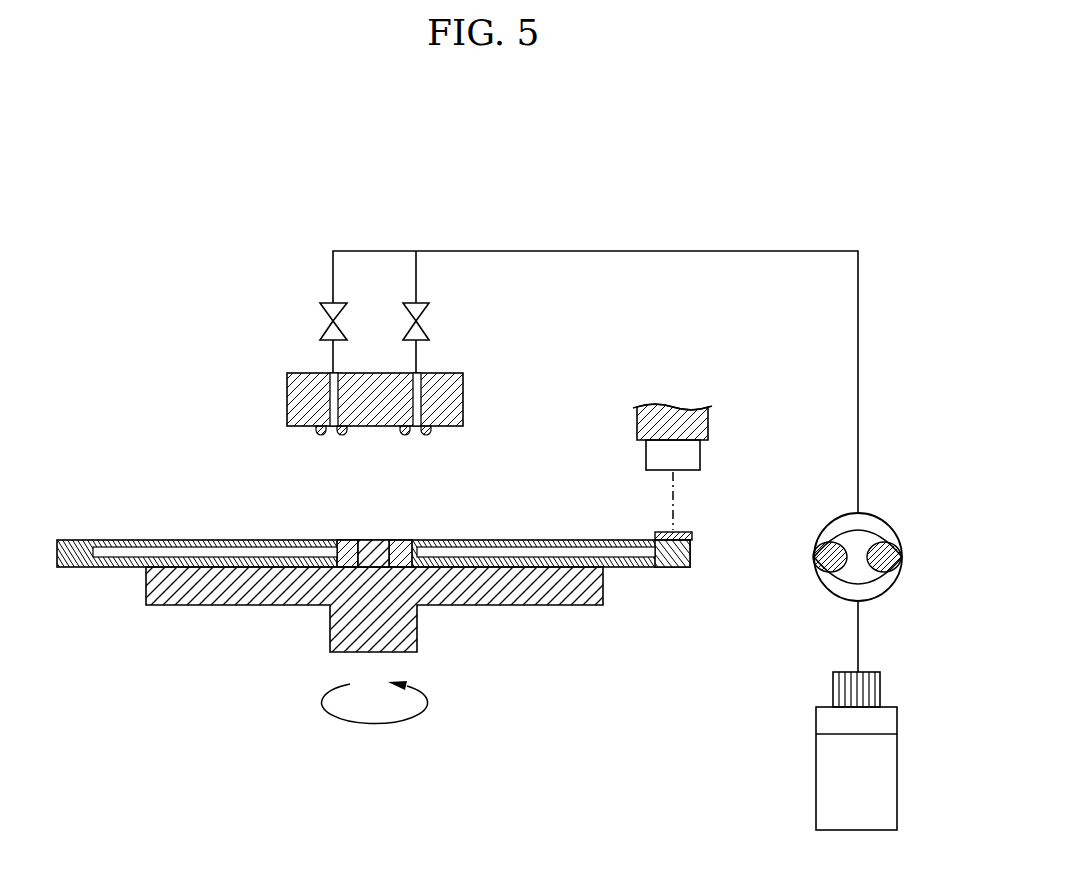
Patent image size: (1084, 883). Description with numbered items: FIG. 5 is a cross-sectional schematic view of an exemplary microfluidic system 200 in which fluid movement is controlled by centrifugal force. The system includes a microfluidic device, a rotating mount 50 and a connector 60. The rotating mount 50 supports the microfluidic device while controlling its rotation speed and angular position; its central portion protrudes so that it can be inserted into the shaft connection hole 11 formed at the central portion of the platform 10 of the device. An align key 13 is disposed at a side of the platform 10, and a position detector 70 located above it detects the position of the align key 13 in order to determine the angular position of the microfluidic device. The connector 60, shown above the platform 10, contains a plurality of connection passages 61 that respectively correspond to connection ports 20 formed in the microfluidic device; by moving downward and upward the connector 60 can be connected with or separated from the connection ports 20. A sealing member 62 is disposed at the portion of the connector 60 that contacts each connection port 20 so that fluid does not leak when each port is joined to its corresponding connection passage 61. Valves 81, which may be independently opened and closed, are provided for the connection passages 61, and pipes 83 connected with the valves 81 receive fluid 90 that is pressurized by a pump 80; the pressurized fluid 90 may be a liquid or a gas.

The microfluidic system 200 is at (168, 324).
The platform 10 is at (77, 558).
The shaft connection hole 11 is at (362, 540).
The align key 13 is at (692, 536).
The connection ports 20 is at (326, 530).
The rotating mount 50 is at (222, 598).
The connector 60 is at (463, 393).
The connection passages 61 is at (420, 373).
The sealing member 62 is at (427, 435).
The position detector 70 is at (693, 455).
The pump 80 is at (888, 520).
The valves 81 is at (303, 309).
The pipes 83 is at (735, 250).
The fluid 90 is at (896, 772).